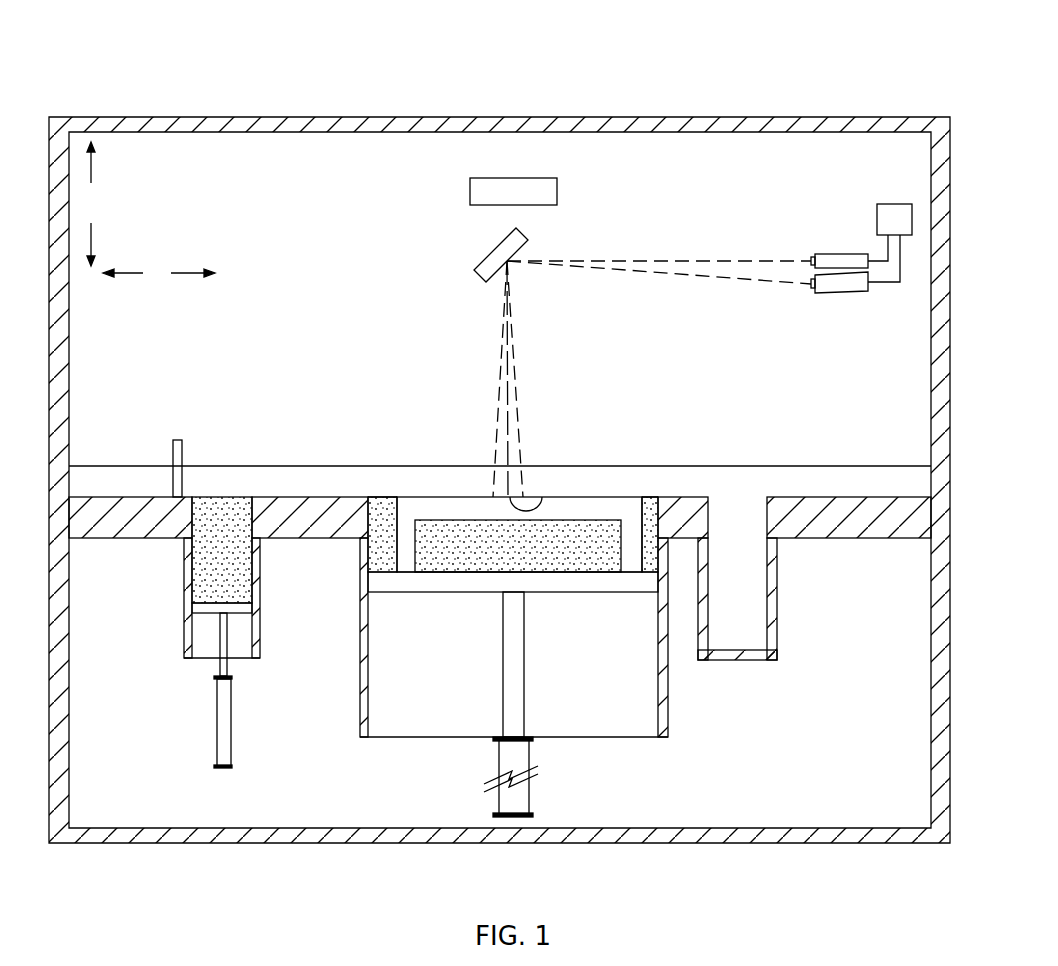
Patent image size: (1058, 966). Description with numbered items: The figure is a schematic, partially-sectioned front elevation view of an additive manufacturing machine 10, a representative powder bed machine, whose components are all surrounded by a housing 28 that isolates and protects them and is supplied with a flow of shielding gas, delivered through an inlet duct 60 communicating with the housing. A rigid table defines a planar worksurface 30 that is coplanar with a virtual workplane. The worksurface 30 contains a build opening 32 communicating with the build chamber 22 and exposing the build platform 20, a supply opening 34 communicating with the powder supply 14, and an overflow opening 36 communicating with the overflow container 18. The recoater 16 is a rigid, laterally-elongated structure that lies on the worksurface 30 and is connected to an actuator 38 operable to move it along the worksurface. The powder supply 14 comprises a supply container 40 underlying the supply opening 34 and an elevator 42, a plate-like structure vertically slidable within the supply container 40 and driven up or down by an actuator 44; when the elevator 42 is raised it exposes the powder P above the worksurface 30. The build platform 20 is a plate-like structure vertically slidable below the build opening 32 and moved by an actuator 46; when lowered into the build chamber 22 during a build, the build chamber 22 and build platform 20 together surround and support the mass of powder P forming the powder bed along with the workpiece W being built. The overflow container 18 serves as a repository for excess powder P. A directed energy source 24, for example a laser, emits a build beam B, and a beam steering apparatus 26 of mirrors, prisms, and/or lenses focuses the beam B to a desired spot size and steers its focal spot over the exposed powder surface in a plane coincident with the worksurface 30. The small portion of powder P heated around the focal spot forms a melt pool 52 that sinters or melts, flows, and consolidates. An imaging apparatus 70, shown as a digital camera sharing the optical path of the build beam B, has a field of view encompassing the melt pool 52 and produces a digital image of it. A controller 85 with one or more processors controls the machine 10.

The additive manufacturing machine 10 is at (480, 66).
The powder supply 14 is at (204, 653).
The recoater 16 is at (177, 440).
The overflow container 18 is at (777, 623).
The build platform 20 is at (442, 594).
The build chamber 22 is at (668, 715).
The directed energy source 24 is at (827, 257).
The beam steering apparatus 26 is at (498, 251).
The housing 28 is at (345, 134).
The worksurface 30 is at (817, 490).
The build opening 32 is at (660, 515).
The supply opening 34 is at (190, 523).
The overflow opening 36 is at (768, 513).
The actuator 38 is at (108, 470).
The supply container 40 is at (259, 600).
The elevator 42 is at (243, 612).
The actuator 44 is at (231, 722).
The actuator 46 is at (525, 684).
The melt pool 52 is at (543, 497).
The inlet duct 60 is at (525, 184).
The imaging apparatus 70 is at (840, 287).
The controller 85 is at (897, 209).
The build beam B is at (516, 368).
The workpiece W is at (628, 515).
The powder P is at (231, 572).